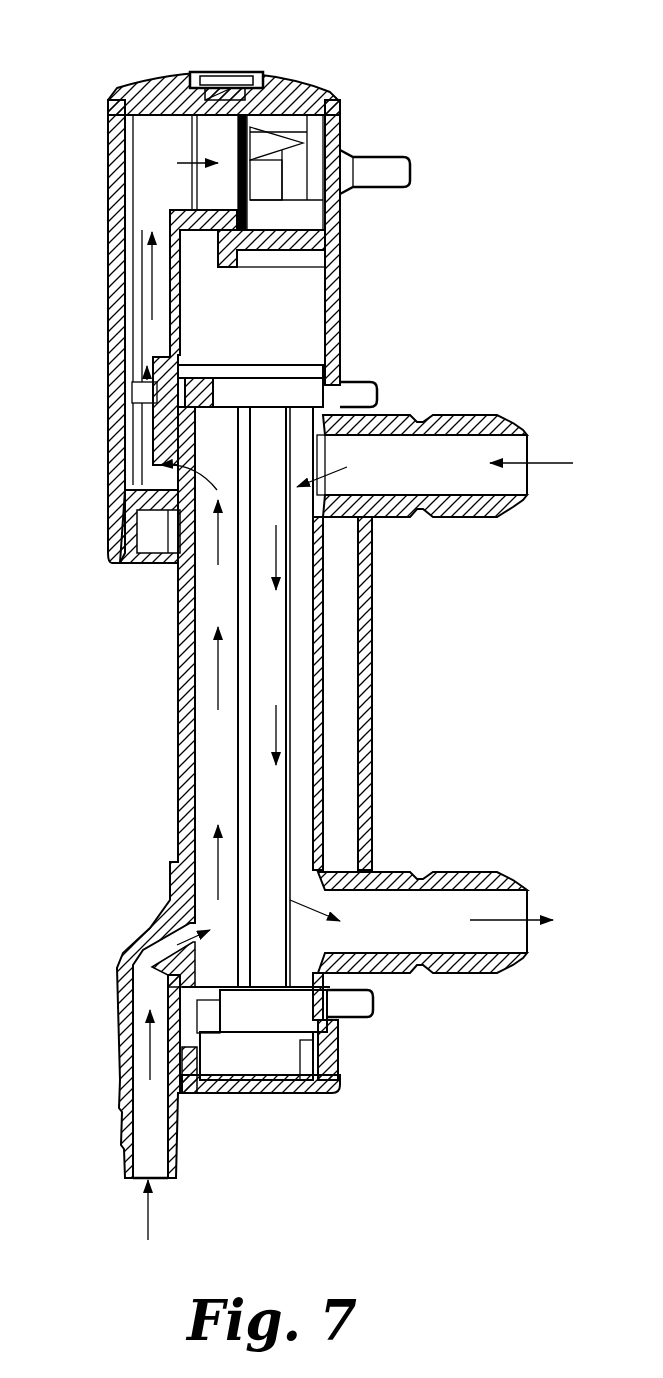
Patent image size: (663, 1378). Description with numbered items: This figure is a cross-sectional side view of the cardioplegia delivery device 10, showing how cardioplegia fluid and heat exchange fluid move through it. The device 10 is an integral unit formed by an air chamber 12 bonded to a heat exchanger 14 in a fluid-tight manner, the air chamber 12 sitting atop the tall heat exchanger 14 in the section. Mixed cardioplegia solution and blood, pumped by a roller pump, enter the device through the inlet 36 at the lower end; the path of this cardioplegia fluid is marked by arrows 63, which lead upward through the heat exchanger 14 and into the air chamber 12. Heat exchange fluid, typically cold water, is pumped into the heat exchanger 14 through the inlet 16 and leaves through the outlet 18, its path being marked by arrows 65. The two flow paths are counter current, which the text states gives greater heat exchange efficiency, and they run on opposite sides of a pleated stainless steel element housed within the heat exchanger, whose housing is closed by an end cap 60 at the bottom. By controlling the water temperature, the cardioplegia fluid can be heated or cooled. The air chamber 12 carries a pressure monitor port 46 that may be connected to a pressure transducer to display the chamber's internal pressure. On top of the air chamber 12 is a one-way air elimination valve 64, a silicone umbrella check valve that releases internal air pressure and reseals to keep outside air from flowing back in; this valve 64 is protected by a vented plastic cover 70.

The cardioplegia delivery device 10 is at (160, 688).
The air chamber 12 is at (113, 440).
The heat exchanger 14 is at (180, 773).
The inlet 16 is at (482, 513).
The outlet 18 is at (483, 973).
The inlet 36 is at (118, 1122).
The pressure monitor port 46 is at (390, 163).
The end cap 60 is at (340, 1085).
The arrows 63 is at (147, 260).
The one-way air elimination valve 64 is at (223, 83).
The arrows 65 is at (557, 463).
The vented plastic cover 70 is at (250, 70).